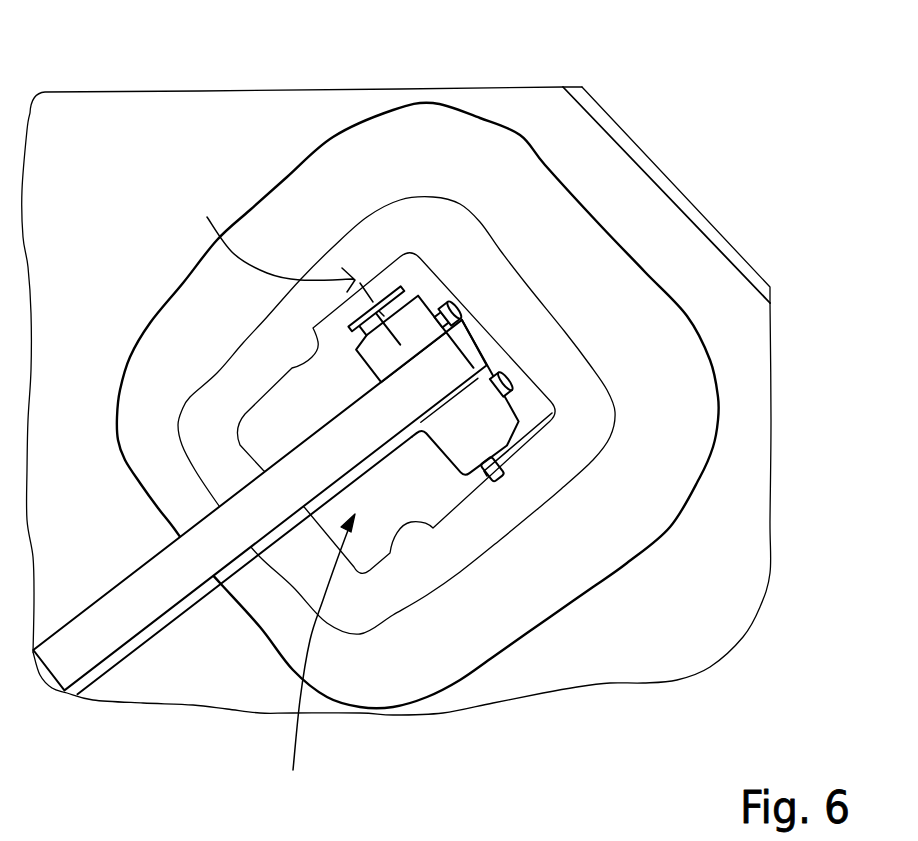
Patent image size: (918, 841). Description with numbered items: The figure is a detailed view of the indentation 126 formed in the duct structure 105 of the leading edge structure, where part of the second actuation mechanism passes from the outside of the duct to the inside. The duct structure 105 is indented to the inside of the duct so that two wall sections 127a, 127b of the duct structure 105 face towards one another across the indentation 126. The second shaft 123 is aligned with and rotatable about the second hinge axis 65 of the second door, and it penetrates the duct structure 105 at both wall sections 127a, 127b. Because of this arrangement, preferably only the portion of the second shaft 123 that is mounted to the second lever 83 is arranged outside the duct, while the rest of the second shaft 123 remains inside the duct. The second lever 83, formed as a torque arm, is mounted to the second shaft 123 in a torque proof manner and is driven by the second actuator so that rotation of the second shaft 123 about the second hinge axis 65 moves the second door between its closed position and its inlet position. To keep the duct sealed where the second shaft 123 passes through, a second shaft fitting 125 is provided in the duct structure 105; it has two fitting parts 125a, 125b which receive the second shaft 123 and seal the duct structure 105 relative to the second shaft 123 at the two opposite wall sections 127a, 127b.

The duct structure 105 is at (273, 143).
The second lever 83 is at (127, 613).
The second hinge axis 65 is at (269, 237).
The second shaft 123 is at (500, 452).
The second shaft fitting 125 is at (508, 414).
The fitting part 125a is at (378, 300).
The fitting part 125b is at (514, 468).
The indentation 126 is at (313, 663).
The wall section 127a is at (290, 367).
The wall section 127b is at (391, 556).